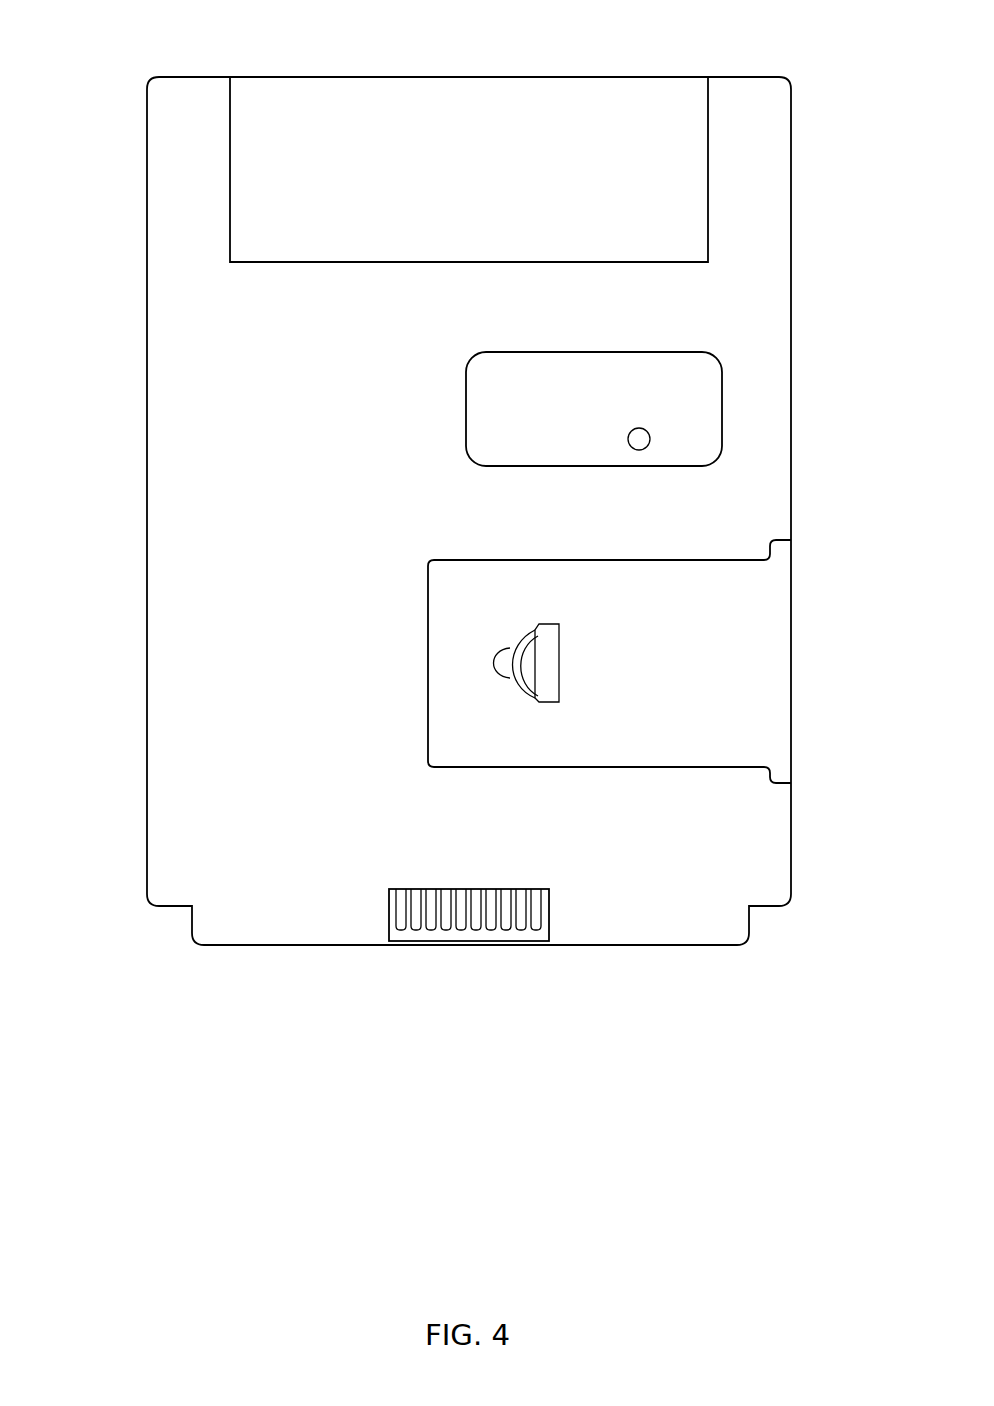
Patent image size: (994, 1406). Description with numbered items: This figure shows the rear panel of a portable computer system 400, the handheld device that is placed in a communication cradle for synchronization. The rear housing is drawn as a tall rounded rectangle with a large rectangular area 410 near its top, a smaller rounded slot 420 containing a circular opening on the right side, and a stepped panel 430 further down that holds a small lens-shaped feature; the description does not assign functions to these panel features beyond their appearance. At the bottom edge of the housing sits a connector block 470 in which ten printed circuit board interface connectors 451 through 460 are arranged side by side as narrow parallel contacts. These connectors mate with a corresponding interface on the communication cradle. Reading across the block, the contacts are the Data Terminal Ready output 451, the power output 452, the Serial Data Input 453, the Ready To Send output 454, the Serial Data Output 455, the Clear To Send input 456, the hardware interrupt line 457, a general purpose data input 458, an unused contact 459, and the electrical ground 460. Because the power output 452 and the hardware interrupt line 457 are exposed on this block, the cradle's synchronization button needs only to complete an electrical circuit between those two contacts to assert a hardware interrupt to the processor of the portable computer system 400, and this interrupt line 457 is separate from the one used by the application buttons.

The portable computer system 400 is at (147, 545).
The display window 410 is at (435, 103).
The slot with button opening 420 is at (636, 428).
The camera panel / lens module area 430 is at (754, 658).
The Data Terminal Ready (DTR) connector 451 is at (401, 922).
The power output connector 452 is at (416, 922).
The Serial Data Input (RXD) connector 453 is at (431, 922).
The Ready To Send (RTS) connector 454 is at (446, 922).
The Serial Data Output (TXD) connector 455 is at (461, 922).
The Clear To Send (CTS) connector 456 is at (476, 922).
The hardware interrupt line 457 is at (491, 922).
The general purpose data input connector 458 is at (506, 922).
The unused connector 459 is at (521, 922).
The electrical ground connector 460 is at (536, 922).
The connector 470 is at (463, 889).